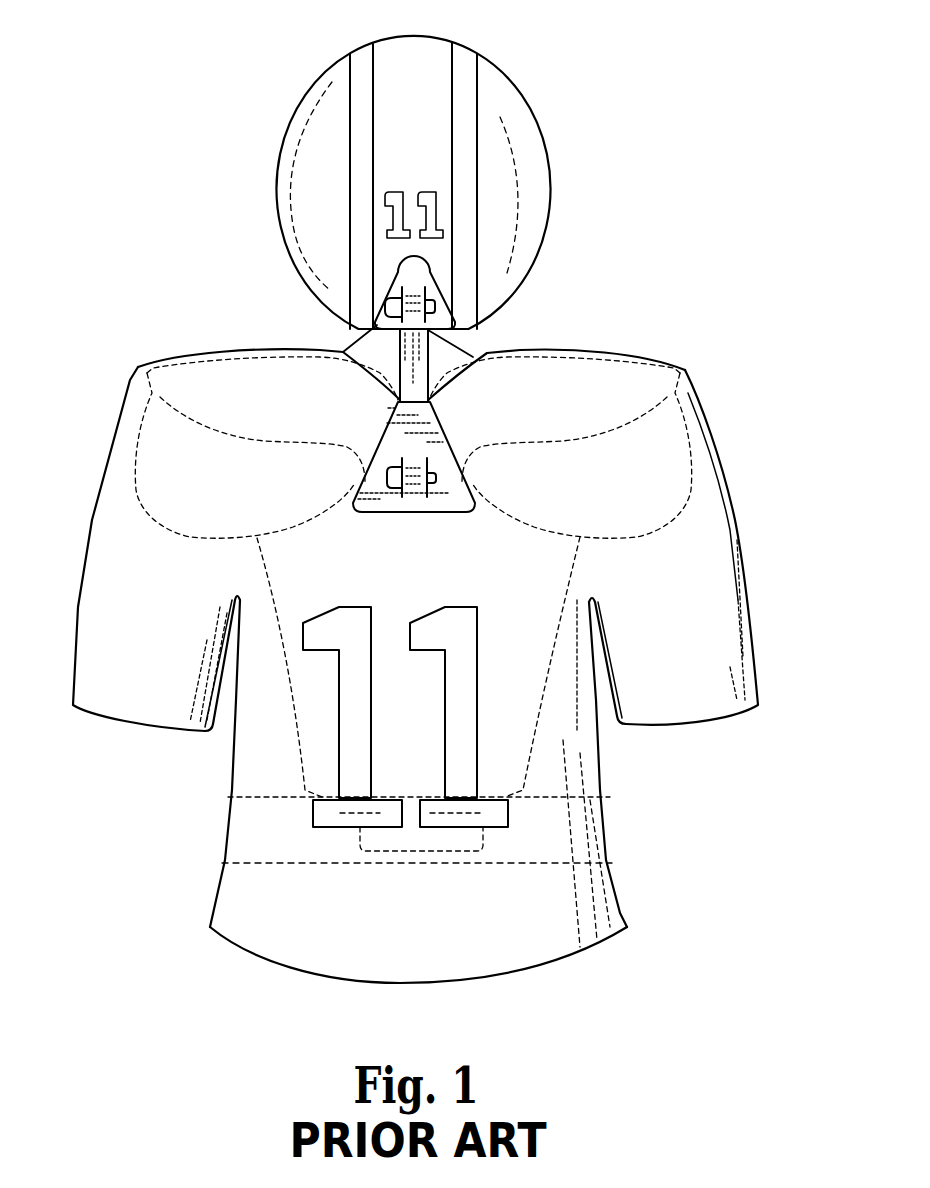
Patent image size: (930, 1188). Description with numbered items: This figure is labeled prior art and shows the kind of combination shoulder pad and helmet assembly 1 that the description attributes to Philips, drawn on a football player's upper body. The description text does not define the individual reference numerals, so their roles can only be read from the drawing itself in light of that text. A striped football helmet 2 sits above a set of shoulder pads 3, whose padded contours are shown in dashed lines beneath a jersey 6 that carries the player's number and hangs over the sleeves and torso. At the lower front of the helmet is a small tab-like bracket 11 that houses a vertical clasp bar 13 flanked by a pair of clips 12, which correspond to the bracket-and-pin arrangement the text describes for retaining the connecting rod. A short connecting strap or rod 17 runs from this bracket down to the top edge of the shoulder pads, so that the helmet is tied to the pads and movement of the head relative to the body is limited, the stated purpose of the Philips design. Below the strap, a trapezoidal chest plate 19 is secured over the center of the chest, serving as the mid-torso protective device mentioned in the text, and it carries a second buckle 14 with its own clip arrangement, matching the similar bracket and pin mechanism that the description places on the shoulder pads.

The protective sports equipment assembly 1 is at (540, 98).
The helmet 2 is at (505, 190).
The shoulder pads 3 is at (430, 338).
The jersey 6 is at (300, 405).
The chin strap tab 11 is at (455, 322).
The clips 12 is at (393, 300).
The clasp 13 is at (437, 303).
The buckle 14 is at (400, 340).
The neck strap 17 is at (430, 390).
The chest plate 19 is at (457, 495).